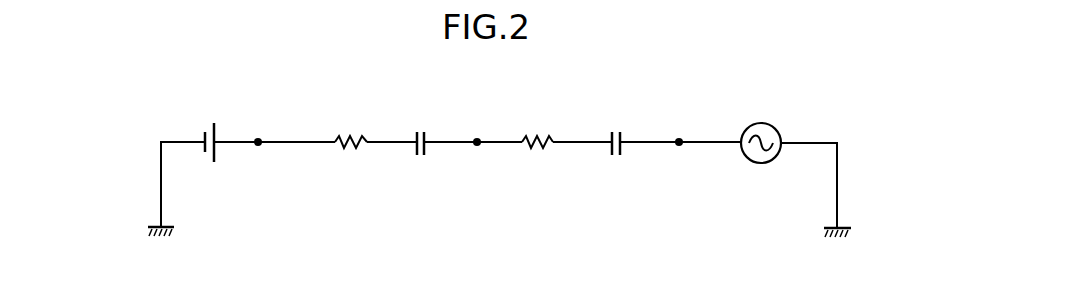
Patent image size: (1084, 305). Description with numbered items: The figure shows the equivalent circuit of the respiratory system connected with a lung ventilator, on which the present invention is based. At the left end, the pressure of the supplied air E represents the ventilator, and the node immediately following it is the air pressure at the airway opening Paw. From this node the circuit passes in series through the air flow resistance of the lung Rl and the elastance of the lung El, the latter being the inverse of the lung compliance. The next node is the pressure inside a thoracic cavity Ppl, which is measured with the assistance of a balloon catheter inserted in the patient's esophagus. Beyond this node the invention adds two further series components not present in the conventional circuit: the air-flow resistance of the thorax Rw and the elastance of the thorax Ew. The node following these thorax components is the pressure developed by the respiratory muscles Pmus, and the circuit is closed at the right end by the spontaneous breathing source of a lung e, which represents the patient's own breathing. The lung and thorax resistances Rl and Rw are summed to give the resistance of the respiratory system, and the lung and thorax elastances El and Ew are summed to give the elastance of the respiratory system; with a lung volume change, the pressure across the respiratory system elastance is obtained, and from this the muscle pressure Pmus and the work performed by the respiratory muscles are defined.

The pressure of the supplied air E is at (207, 126).
The air pressure at the airway opening Paw is at (258, 142).
The air flow resistance of the lung Rl is at (351, 156).
The elastance of the lung El is at (412, 159).
The pressure inside a thoracic cavity Ppl is at (477, 142).
The air-flow resistance of the thorax Rw is at (537, 156).
The elastance of the thorax Ew is at (613, 159).
The pressure developed by the respiratory muscles Pmus is at (679, 142).
The spontaneous breathing source of a lung e is at (761, 130).